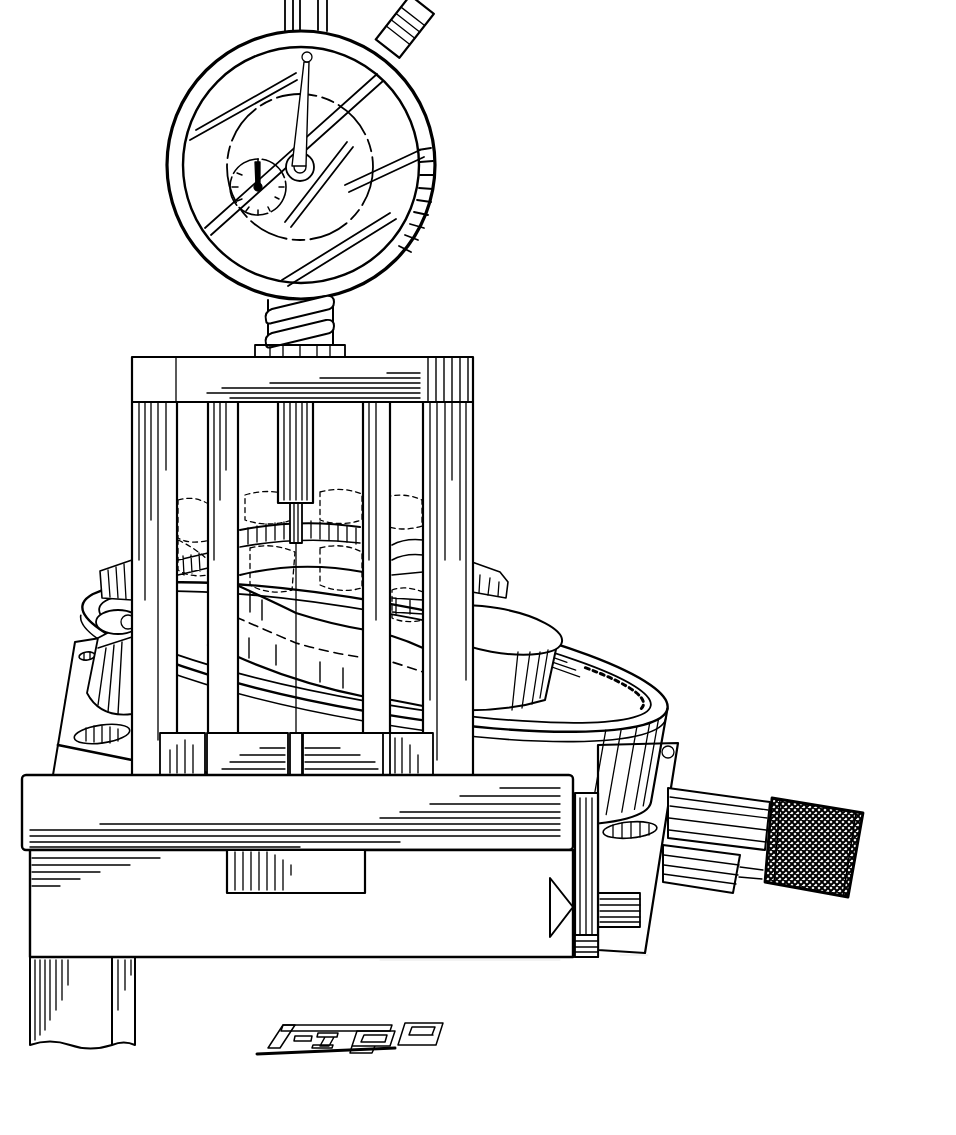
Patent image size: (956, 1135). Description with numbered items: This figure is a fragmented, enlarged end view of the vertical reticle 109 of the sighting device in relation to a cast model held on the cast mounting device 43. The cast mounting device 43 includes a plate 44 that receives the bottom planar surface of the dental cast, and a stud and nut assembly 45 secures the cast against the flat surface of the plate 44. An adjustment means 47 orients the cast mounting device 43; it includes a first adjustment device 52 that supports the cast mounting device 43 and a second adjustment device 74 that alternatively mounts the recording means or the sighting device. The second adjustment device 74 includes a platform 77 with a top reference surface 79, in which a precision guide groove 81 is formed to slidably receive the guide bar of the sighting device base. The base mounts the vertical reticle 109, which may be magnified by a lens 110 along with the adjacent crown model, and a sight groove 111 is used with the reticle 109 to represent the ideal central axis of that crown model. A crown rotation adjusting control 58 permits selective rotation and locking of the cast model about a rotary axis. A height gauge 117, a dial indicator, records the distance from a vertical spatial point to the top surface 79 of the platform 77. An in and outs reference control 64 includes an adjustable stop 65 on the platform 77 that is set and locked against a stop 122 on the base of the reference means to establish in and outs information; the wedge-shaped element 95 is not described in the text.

The height gauge 117 is at (440, 130).
The lens 110 is at (337, 432).
The vertical reticle 109 is at (299, 717).
The sight groove 111 is at (294, 780).
The cast mounting device 43 is at (543, 607).
The plate 44 is at (532, 636).
The stud and nut assembly 45 is at (420, 557).
The first adjustment device 52 is at (643, 669).
The second adjustment device 74 is at (462, 962).
The platform 77 is at (460, 905).
The top reference surface 79 is at (178, 850).
The precision guide groove 81 is at (310, 893).
The stop 122 is at (577, 862).
The wedge 95 is at (556, 910).
The adjustable stop 65 is at (578, 937).
The in and outs reference control 64 is at (600, 866).
The crown rotation adjusting control 58 is at (798, 797).
The adjustment means 47 is at (583, 973).